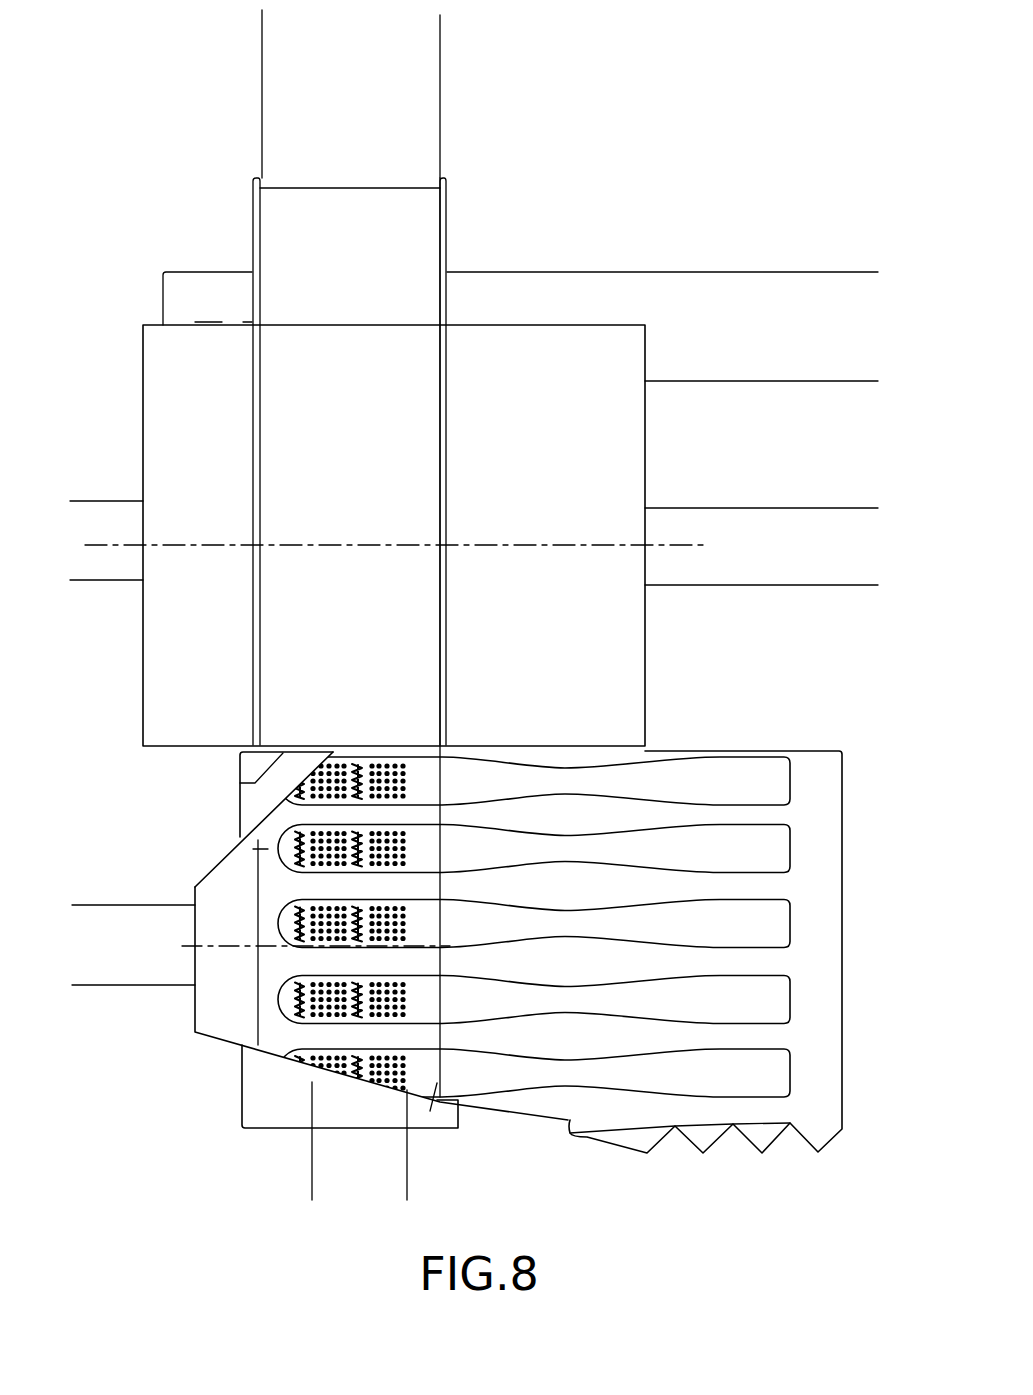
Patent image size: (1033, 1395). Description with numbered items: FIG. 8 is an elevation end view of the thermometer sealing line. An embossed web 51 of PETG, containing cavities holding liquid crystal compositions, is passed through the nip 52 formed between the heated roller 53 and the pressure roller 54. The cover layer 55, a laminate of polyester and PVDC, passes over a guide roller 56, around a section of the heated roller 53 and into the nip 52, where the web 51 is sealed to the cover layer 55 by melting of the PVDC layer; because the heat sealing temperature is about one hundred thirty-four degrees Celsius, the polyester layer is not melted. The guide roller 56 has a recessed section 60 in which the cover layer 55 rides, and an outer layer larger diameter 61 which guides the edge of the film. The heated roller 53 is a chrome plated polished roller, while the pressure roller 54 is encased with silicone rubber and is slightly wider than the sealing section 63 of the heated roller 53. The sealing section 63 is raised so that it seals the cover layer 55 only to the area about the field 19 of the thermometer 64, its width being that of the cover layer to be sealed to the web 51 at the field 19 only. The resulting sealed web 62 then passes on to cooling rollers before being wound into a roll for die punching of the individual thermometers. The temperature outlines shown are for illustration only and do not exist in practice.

The field 19 is at (312, 1185).
The embossed web 51 is at (775, 750).
The nip 52 is at (240, 785).
The heated roller 53 is at (213, 401).
The pressure roller 54 is at (272, 1072).
The cover layer 55 is at (350, 187).
The guide roller 56 is at (330, 235).
The recessed section 60 is at (440, 25).
The outer layer larger diameter 61 is at (252, 181).
The sealed web 62 is at (273, 1018).
The sealing section 63 is at (342, 673).
The thermometer 64 is at (255, 841).